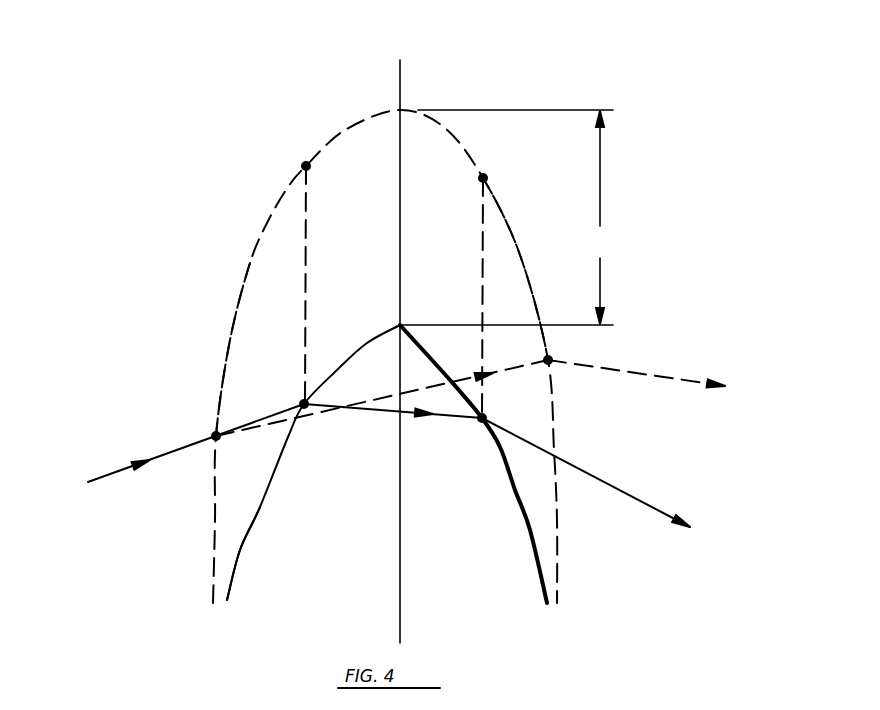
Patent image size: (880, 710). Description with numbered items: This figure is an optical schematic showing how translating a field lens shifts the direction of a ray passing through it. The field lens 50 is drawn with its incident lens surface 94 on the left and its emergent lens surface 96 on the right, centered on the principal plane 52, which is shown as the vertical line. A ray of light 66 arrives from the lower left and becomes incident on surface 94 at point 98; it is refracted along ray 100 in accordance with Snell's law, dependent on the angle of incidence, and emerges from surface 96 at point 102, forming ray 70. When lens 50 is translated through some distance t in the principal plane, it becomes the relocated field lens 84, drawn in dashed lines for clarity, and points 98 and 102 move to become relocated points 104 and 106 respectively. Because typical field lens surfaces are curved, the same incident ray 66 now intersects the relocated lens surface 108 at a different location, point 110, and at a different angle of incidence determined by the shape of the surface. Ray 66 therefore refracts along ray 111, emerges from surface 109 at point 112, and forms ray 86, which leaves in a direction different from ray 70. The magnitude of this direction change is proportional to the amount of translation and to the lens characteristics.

The field lens 50 is at (287, 581).
The principal plane 52 is at (400, 91).
The ray of light 66 is at (103, 474).
The ray 70 is at (620, 490).
The relocated field lens 84 is at (343, 204).
The ray 86 is at (638, 373).
The incident lens surface 94 is at (256, 503).
The emergent lens surface 96 is at (530, 532).
The point 98 is at (304, 404).
The ray 100 is at (443, 417).
The point 102 is at (482, 418).
The point 104 is at (306, 166).
The point 106 is at (483, 178).
The relocated lens surface 108 is at (252, 264).
The surface 109 is at (512, 228).
The point 110 is at (216, 436).
The ray 111 is at (372, 401).
The point 112 is at (548, 360).
The distance t is at (506, 217).